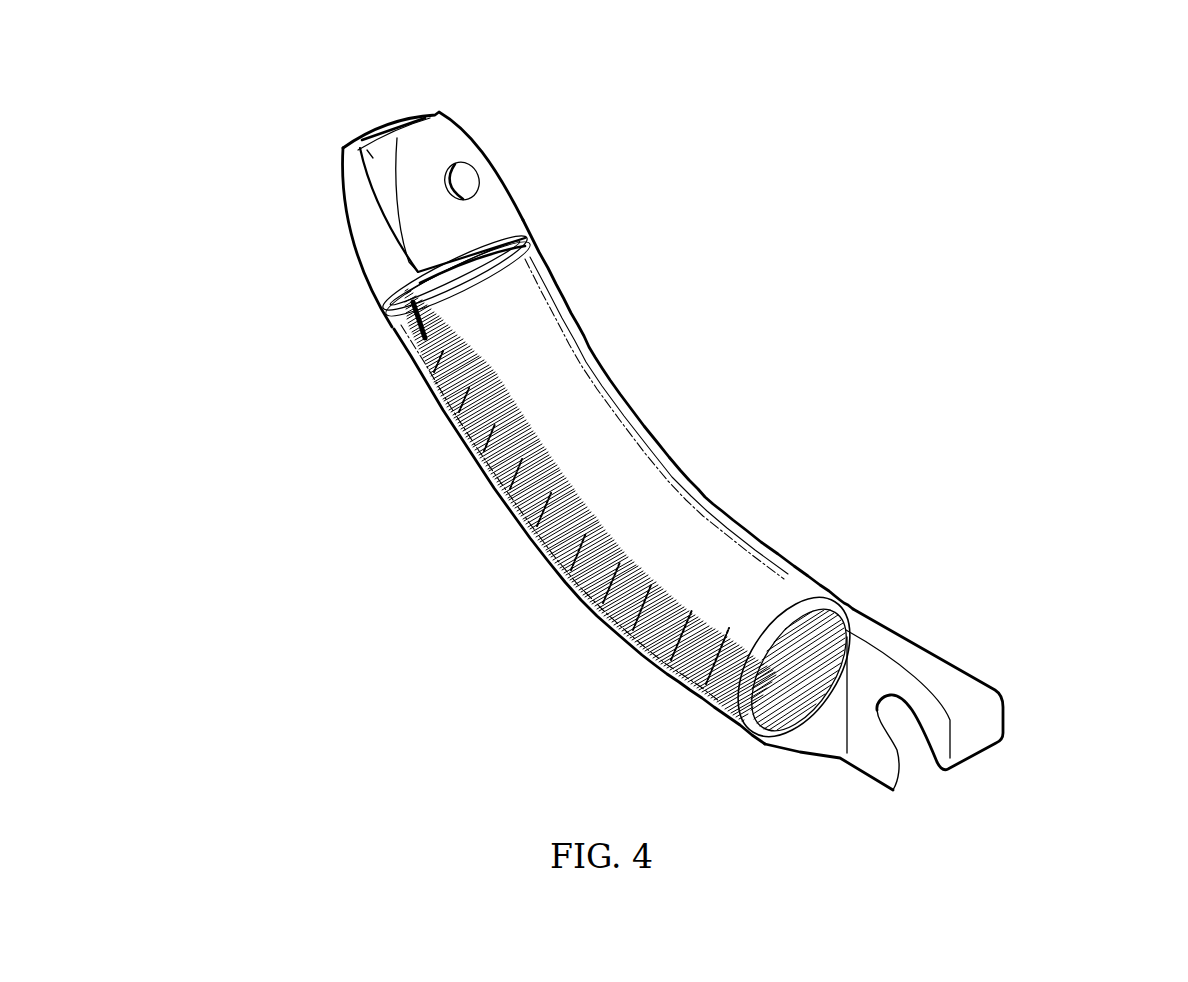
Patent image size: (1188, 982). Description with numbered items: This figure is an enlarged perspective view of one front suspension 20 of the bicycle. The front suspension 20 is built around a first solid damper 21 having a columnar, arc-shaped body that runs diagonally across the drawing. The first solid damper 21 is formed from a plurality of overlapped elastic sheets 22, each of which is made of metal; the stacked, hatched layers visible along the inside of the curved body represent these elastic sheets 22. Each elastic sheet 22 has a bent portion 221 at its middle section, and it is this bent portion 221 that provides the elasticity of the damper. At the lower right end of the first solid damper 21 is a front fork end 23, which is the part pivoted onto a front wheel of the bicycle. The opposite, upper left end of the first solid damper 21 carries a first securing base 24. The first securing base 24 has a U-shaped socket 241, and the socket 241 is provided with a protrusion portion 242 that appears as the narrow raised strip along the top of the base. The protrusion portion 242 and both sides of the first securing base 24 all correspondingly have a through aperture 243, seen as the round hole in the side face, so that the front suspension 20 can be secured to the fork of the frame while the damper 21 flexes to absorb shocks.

The front suspension 20 is at (680, 457).
The first solid damper 21 is at (473, 463).
The elastic sheet 22 is at (628, 463).
The bent portion 221 is at (537, 545).
The front fork end 23 is at (940, 673).
The first securing base 24 is at (378, 287).
The U-shaped socket 241 is at (393, 186).
The protrusion portion 242 is at (362, 140).
The through aperture 243 is at (469, 178).